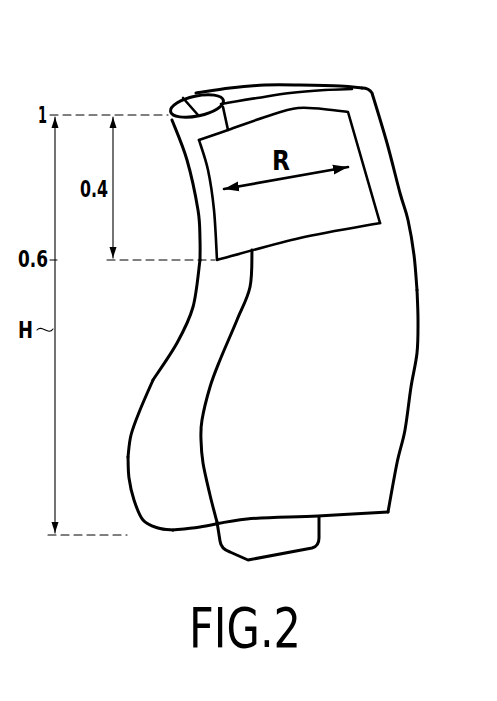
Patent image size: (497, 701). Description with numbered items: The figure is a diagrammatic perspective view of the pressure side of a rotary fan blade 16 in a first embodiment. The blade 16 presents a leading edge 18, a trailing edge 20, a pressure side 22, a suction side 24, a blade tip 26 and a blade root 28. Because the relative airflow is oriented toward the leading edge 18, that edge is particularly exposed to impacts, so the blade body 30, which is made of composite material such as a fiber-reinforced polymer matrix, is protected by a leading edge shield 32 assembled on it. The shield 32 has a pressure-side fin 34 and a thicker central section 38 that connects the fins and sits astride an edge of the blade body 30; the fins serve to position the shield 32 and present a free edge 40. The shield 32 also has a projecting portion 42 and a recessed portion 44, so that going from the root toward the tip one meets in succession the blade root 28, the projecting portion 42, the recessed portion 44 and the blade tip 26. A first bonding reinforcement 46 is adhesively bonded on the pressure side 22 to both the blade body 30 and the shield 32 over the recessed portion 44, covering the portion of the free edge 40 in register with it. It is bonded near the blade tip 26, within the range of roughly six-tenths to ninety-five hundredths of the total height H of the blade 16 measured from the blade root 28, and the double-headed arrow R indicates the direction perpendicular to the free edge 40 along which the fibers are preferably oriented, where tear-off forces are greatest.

The rotary blade 16 is at (118, 100).
The leading edge 18 is at (173, 347).
The trailing edge 20 is at (418, 305).
The pressure side 22 is at (382, 186).
The suction side 24 is at (250, 85).
The blade tip 26 is at (267, 90).
The blade root 28 is at (328, 546).
The blade body 30 is at (377, 428).
The leading edge shield 32 is at (126, 462).
The pressure-side fin 34 is at (210, 109).
The central section 38 is at (178, 107).
The free edge 40 is at (210, 385).
The projecting portion 42 is at (140, 408).
The recessed portion 44 is at (197, 238).
The first bonding reinforcement 46 is at (342, 135).